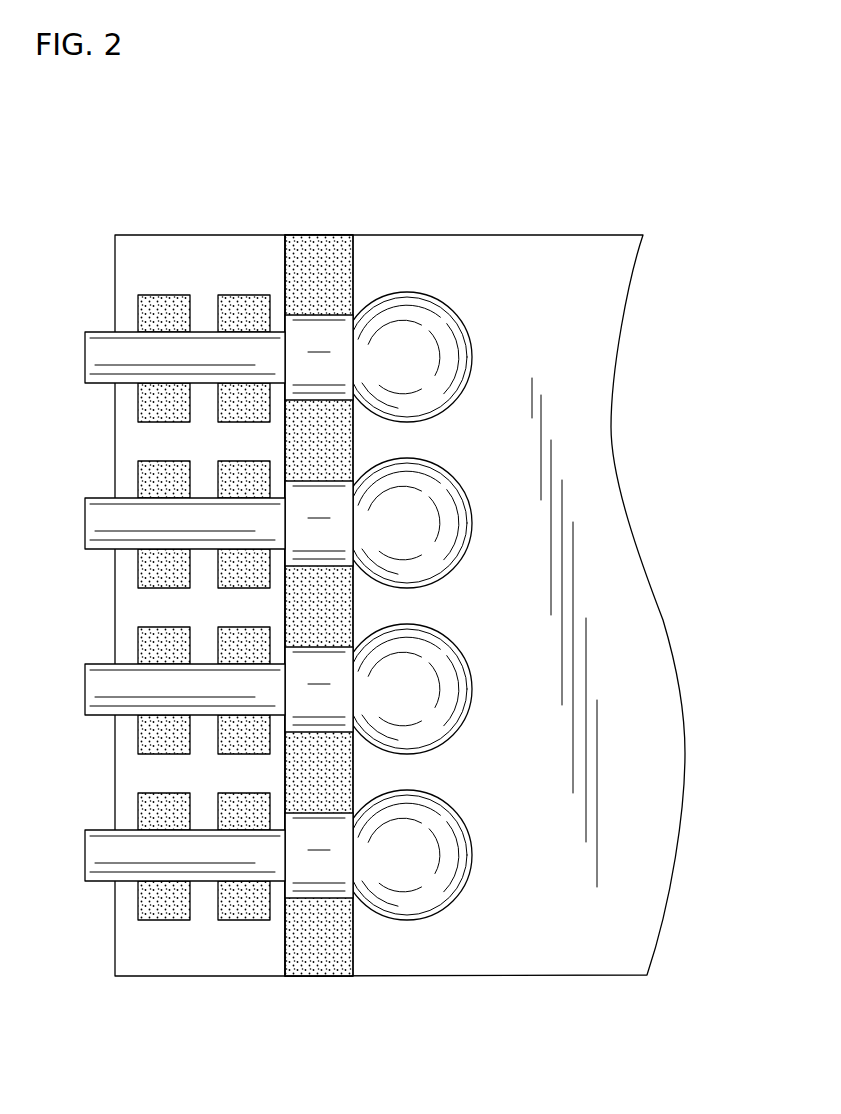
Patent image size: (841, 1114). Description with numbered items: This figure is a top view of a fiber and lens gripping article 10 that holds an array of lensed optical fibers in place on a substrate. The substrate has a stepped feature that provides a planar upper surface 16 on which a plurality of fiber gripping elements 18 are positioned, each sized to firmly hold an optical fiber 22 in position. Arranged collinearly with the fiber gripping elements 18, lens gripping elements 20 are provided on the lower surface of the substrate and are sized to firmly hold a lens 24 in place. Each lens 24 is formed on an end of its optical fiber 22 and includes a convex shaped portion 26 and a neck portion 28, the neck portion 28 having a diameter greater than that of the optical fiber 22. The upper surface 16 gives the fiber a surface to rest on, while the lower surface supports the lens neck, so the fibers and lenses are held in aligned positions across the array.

The fiber and lens gripping article 10 is at (531, 170).
The upper surface 16 is at (150, 253).
The fiber gripping element 18 is at (232, 308).
The lens gripping element 20 is at (342, 430).
The optical fiber 22 is at (88, 702).
The lens 24 is at (480, 682).
The convex shaped portion 26 is at (442, 710).
The neck portion 28 is at (340, 514).